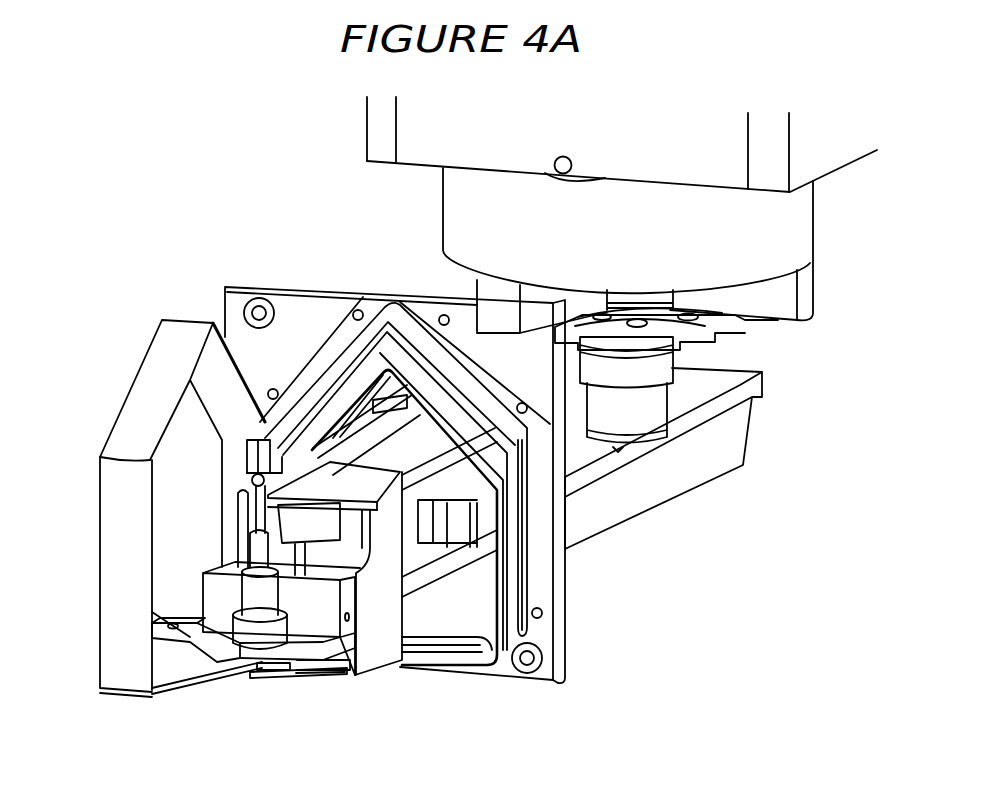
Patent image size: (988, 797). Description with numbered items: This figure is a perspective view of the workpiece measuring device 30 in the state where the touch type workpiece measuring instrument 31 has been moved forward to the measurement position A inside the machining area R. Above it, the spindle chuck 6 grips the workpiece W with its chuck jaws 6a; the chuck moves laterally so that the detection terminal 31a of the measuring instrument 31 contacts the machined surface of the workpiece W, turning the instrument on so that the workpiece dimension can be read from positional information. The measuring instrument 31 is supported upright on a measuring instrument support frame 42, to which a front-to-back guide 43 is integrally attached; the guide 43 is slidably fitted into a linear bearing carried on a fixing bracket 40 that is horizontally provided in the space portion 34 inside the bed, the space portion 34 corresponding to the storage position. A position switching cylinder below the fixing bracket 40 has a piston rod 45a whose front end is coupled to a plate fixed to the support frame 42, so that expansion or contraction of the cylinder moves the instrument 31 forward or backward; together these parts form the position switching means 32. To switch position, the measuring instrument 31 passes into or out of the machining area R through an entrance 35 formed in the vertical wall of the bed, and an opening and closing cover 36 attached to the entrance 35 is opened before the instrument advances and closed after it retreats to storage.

The spindle chuck 6 is at (797, 220).
The chuck jaws 6a is at (783, 297).
The workpiece W is at (653, 403).
The fixing bracket 40 is at (703, 392).
The space portion 34 is at (779, 573).
The piston rod 45a is at (427, 573).
The entrance 35 is at (417, 655).
The guide 43 is at (430, 457).
The opening and closing cover 36 is at (136, 377).
The workpiece measuring device 30 is at (178, 692).
The workpiece measuring instrument 31 is at (253, 598).
The detection terminal 31a is at (252, 470).
The measuring instrument support frame 42 is at (372, 622).
The position switching means 32 is at (625, 560).
The measurement position A is at (263, 687).
The machining area R is at (78, 609).